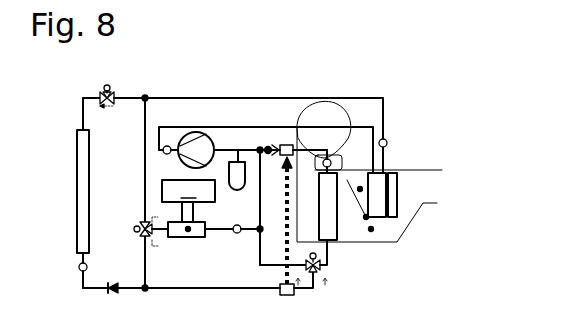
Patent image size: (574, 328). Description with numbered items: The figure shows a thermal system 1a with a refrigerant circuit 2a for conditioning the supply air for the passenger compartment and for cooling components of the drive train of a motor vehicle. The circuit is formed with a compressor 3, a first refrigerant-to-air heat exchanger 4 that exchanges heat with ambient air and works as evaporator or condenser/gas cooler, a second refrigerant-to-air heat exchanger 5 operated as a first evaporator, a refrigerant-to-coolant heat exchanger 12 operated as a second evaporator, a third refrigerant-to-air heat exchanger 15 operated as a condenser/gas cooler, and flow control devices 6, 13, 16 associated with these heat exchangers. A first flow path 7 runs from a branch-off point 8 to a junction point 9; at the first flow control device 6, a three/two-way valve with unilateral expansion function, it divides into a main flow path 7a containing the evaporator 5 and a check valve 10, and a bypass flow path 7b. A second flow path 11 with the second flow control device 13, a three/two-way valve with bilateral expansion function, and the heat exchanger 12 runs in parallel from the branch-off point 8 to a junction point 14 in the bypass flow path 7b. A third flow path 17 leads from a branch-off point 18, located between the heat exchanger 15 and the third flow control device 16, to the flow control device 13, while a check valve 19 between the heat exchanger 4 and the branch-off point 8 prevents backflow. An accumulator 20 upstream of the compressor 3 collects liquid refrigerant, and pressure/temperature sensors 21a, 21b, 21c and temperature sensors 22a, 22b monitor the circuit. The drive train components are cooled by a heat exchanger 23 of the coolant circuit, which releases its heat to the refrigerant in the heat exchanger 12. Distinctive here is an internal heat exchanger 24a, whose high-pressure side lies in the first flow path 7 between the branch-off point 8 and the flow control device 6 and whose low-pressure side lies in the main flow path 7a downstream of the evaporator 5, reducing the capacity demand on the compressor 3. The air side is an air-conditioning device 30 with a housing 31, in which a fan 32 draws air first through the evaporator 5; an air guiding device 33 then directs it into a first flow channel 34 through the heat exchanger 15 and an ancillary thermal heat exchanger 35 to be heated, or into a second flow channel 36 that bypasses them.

The thermal system 1a is at (288, 109).
The refrigerant circuit 2a is at (81, 87).
The compressor 3 is at (200, 133).
The first refrigerant-to-air heat exchanger 4 is at (83, 177).
The second refrigerant-to-air heat exchanger 5 is at (327, 196).
The first flow control device 6 is at (310, 256).
The first flow path 7 is at (244, 290).
The main flow path 7a is at (329, 256).
The bypass flow path 7b is at (258, 265).
The branch-off point 8 is at (148, 291).
The junction point 9 is at (261, 147).
The check valve 10 is at (270, 143).
The second flow path 11 is at (143, 252).
The refrigerant-to-coolant heat exchanger 12 is at (188, 231).
The second flow control device 13 is at (134, 228).
The junction point 14 is at (261, 226).
The third refrigerant-to-air heat exchanger 15 is at (378, 205).
The third flow control device 16 is at (108, 85).
The third flow path 17 is at (143, 113).
The branch-off point 18 is at (146, 94).
The check valve 19 is at (110, 293).
The accumulator 20 is at (240, 180).
The pressure/temperature sensor 21a is at (164, 153).
The pressure/temperature sensor 21b is at (80, 271).
The pressure/temperature sensor 21c is at (234, 225).
The temperature sensor 22a is at (331, 162).
The temperature sensor 22b is at (387, 142).
The heat exchanger 23 is at (188, 201).
The internal heat exchanger 24a is at (292, 296).
The air-conditioning device 30 is at (432, 222).
The housing 31 is at (432, 169).
The fan 32 is at (329, 113).
The air guiding device 33 is at (347, 180).
The first flow channel 34 is at (360, 189).
The ancillary thermal heat exchanger 35 is at (392, 203).
The second flow channel 36 is at (371, 229).